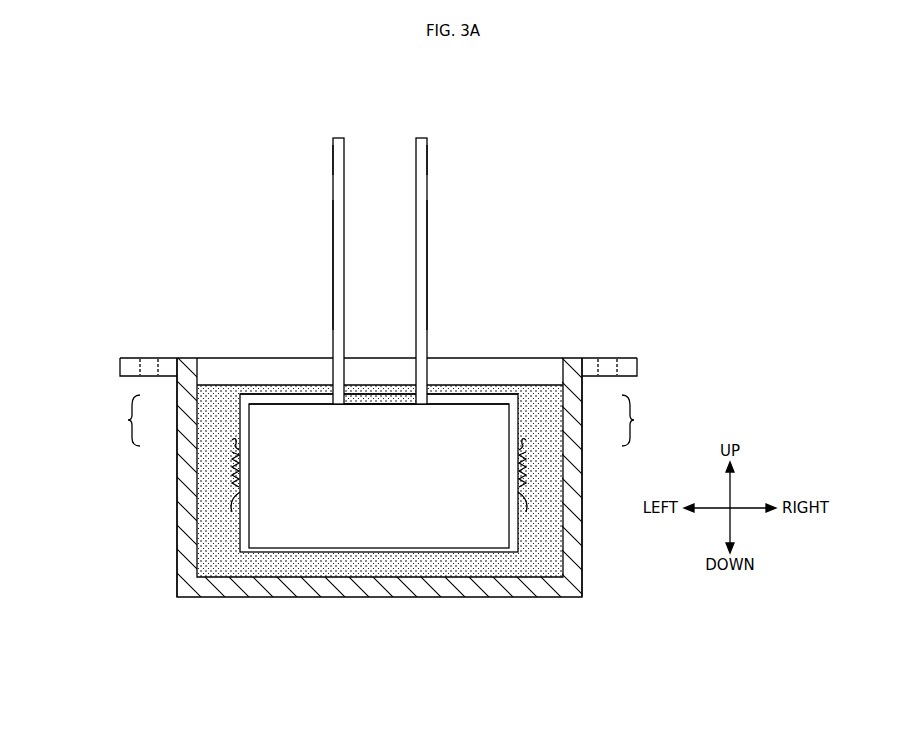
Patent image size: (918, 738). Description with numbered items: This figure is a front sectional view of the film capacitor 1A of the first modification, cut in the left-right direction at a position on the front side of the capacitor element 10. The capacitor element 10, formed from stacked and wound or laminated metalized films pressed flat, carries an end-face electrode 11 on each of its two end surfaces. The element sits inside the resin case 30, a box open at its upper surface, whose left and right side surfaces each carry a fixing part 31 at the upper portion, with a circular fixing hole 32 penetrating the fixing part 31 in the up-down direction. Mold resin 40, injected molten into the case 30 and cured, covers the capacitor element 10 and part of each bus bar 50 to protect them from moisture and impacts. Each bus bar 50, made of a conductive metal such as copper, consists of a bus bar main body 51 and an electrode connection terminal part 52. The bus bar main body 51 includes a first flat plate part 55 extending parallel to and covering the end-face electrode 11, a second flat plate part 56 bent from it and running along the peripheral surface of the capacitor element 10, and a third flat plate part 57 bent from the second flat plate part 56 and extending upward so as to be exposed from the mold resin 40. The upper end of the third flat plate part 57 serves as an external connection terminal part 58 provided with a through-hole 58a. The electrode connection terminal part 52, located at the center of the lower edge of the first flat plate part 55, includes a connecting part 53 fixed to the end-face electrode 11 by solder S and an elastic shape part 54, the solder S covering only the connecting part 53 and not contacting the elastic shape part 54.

The film capacitor 1A is at (146, 190).
The capacitor element 10 is at (378, 560).
The end-face electrode 11 is at (197, 556).
The case 30 is at (197, 357).
The fixing part 31 is at (125, 358).
The fixing hole 32 is at (148, 357).
The mold resin 40 is at (287, 552).
The bus bar 50 is at (325, 237).
The bus bar main body 51 is at (348, 296).
The electrode connection terminal part 52 is at (381, 420).
The connecting part 53 is at (234, 475).
The elastic shape part 54 is at (234, 442).
The first flat plate part 55 is at (232, 392).
The second flat plate part 56 is at (277, 394).
The third flat plate part 57 is at (348, 346).
The external connection terminal part 58 is at (345, 140).
The through-hole 58a is at (332, 160).
The solder S is at (232, 500).